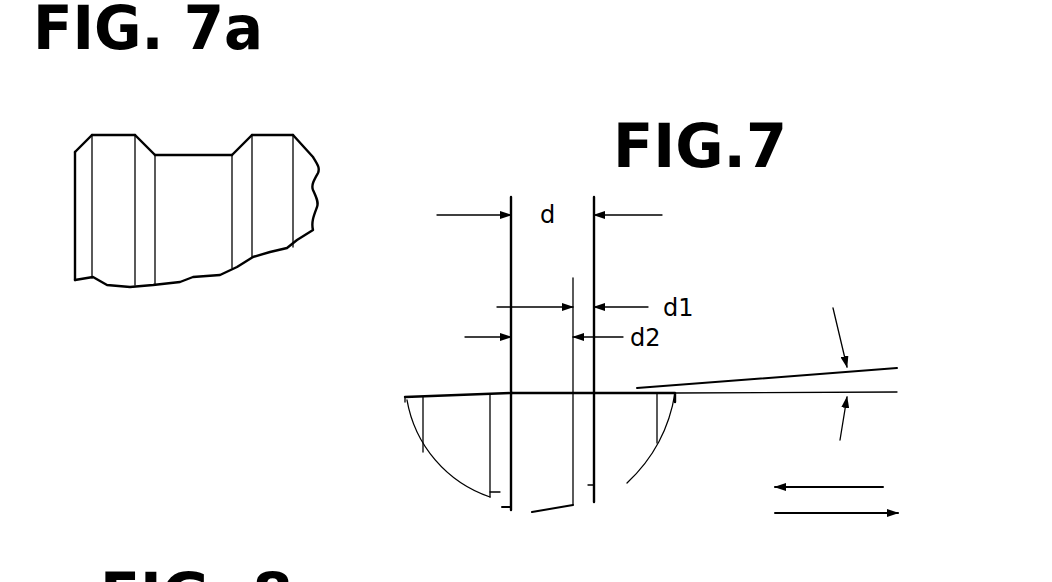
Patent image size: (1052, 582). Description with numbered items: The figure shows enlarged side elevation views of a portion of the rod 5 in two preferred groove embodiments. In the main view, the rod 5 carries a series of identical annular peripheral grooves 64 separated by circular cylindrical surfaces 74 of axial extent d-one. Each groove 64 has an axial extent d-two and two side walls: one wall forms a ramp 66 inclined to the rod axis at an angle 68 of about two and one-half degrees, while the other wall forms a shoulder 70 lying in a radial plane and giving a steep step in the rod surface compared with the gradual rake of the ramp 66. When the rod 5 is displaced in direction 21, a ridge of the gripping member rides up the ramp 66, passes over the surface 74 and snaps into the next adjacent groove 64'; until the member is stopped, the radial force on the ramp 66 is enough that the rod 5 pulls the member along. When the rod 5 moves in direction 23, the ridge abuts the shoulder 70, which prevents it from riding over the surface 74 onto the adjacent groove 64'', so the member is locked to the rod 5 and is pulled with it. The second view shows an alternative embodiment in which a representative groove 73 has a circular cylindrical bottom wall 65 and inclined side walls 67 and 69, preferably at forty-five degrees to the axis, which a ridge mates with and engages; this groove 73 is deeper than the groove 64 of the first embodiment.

In FIG. 7a, the rod 5 is at (327, 237).
In FIG. 7, the rod 5 is at (423, 447).
In FIG. 7a, the inclined side wall 67 is at (148, 137).
In FIG. 7a, the groove 73 is at (192, 140).
In FIG. 7a, the bottom wall 65 is at (214, 153).
In FIG. 7a, the inclined side wall 69 is at (240, 147).
In FIG. 7, the groove 64 is at (471, 353).
In FIG. 7, the next adjacent groove 64' is at (663, 373).
In FIG. 7, the next adjacent groove 64'' is at (430, 383).
In FIG. 7, the ramp 66 is at (527, 407).
In FIG. 7, the shoulder 70 is at (515, 478).
In FIG. 7, the circular cylindrical surface 74 is at (500, 492).
In FIG. 7, the angle 68 is at (870, 379).
In FIG. 7, the direction 21 is at (810, 486).
In FIG. 7, the direction 23 is at (808, 516).